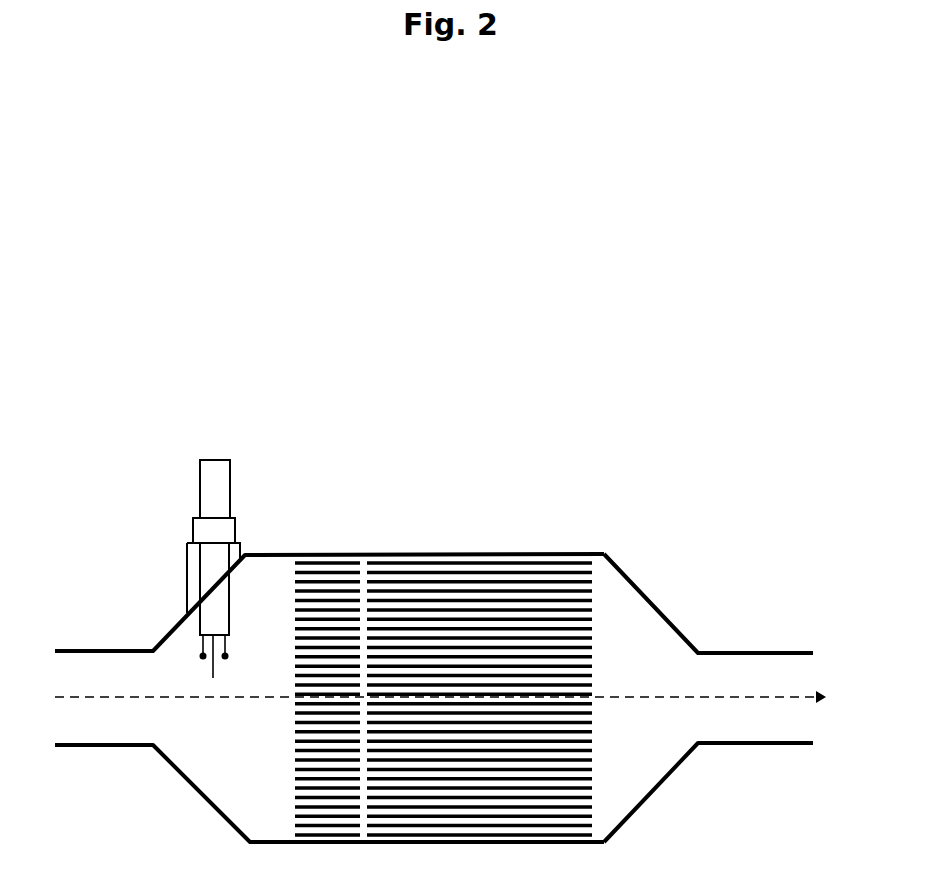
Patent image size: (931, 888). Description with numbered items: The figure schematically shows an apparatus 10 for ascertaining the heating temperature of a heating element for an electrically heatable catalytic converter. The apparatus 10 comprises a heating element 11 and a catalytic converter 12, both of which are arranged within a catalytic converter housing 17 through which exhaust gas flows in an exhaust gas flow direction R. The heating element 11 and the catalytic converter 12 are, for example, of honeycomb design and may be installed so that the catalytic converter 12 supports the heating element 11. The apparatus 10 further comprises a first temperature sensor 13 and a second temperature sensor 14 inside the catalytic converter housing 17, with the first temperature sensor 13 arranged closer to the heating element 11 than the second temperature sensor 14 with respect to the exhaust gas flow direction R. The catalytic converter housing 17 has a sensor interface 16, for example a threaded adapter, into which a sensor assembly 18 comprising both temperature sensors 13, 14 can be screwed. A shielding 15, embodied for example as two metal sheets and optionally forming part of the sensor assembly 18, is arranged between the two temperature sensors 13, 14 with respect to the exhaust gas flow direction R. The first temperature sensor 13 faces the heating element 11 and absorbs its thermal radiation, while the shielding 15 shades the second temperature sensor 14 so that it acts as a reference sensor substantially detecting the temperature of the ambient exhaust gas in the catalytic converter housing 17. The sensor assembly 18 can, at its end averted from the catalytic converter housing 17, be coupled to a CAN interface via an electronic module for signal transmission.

The apparatus 10 is at (177, 303).
The heating element 11 is at (318, 597).
The catalytic converter 12 is at (473, 590).
The first temperature sensor 13 is at (233, 662).
The second temperature sensor 14 is at (201, 668).
The shielding 15 is at (213, 679).
The sensor interface 16 is at (187, 580).
The catalytic converter housing 17 is at (650, 598).
The sensor assembly 18 is at (208, 529).
The exhaust gas flow direction R is at (640, 697).